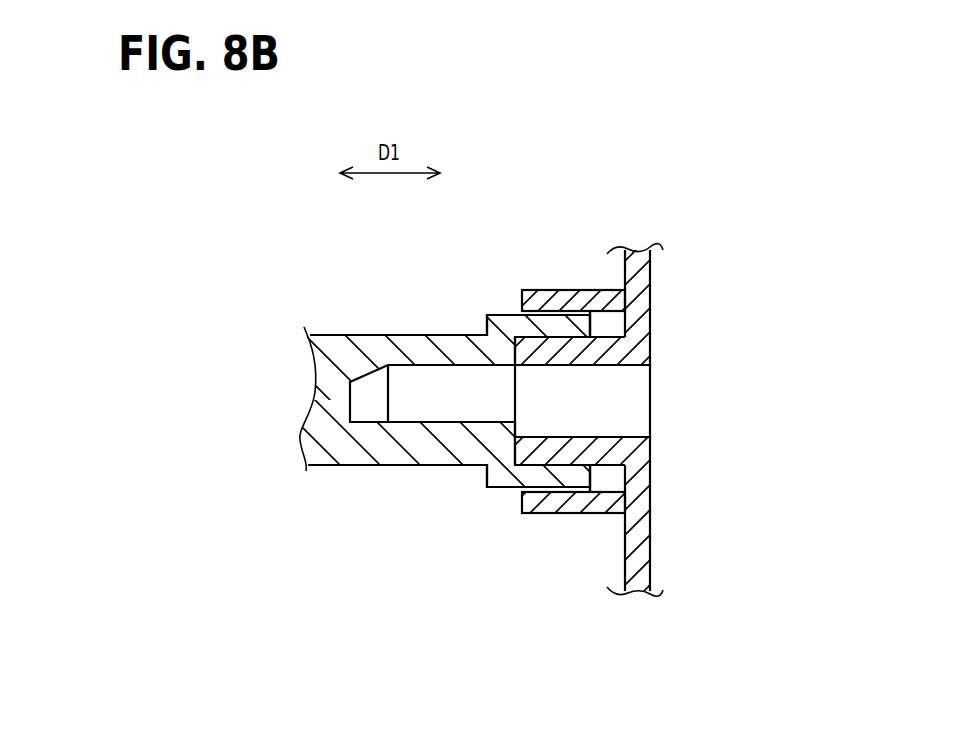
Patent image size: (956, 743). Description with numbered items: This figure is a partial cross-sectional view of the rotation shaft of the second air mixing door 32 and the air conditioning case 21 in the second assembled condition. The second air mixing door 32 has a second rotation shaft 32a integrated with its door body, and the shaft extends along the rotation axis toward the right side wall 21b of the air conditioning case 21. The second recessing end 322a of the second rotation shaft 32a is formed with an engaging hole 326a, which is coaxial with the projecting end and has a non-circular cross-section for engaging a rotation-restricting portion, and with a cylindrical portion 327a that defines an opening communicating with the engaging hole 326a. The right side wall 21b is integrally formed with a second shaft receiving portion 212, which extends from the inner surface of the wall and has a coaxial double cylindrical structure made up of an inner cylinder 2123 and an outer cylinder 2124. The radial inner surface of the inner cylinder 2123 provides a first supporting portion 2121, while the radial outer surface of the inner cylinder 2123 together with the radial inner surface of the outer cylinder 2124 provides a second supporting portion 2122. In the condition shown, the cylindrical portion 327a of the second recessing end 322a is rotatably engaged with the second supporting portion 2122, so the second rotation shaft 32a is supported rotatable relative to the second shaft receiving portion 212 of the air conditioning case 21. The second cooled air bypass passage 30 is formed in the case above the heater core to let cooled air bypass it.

The air conditioning case 21 is at (663, 508).
The right side wall 21b is at (651, 563).
The second shaft receiving portion 212 is at (686, 107).
The first supporting portion 2121 is at (570, 405).
The second supporting portion 2122 is at (605, 322).
The inner cylinder 2123 is at (610, 450).
The outer cylinder 2124 is at (546, 497).
The second cooled air bypass passage 30 is at (360, 507).
The second air mixing door 32 is at (323, 470).
The second rotation shaft 32a is at (323, 335).
The second recessing end 322a is at (452, 335).
The engaging hole 326a is at (433, 447).
The cylindrical portion 327a is at (527, 290).